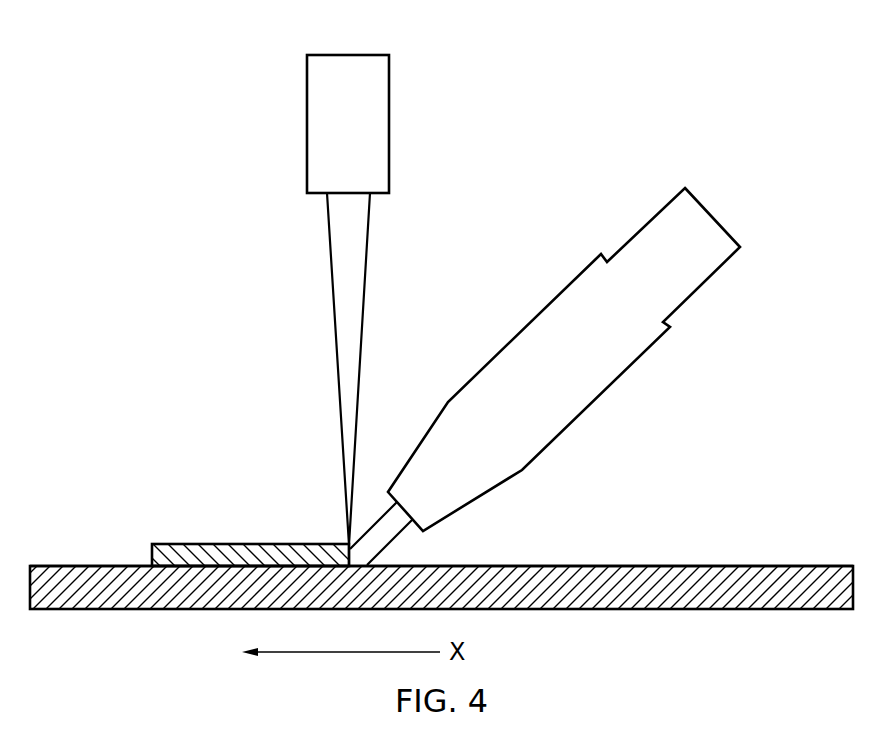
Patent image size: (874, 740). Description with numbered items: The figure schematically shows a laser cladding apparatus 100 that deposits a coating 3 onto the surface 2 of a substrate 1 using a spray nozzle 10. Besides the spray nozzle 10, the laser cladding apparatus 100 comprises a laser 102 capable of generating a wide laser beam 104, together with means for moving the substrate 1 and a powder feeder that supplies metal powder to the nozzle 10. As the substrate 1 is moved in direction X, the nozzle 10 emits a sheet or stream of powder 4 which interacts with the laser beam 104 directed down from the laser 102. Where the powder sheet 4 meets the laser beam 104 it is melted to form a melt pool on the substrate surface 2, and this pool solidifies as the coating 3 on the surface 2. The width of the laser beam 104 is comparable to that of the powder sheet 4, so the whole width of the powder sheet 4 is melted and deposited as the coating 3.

The laser cladding apparatus 100 is at (645, 26).
The laser 102 is at (307, 106).
The laser beam 104 is at (333, 318).
The spray nozzle 10 is at (628, 386).
The powder sheet 4 is at (383, 550).
The substrate 1 is at (70, 585).
The surface 2 is at (123, 566).
The coating 3 is at (193, 544).